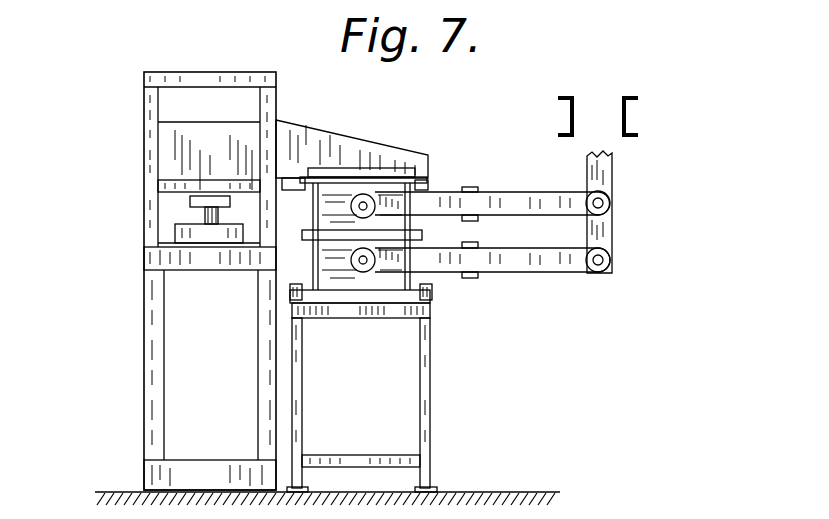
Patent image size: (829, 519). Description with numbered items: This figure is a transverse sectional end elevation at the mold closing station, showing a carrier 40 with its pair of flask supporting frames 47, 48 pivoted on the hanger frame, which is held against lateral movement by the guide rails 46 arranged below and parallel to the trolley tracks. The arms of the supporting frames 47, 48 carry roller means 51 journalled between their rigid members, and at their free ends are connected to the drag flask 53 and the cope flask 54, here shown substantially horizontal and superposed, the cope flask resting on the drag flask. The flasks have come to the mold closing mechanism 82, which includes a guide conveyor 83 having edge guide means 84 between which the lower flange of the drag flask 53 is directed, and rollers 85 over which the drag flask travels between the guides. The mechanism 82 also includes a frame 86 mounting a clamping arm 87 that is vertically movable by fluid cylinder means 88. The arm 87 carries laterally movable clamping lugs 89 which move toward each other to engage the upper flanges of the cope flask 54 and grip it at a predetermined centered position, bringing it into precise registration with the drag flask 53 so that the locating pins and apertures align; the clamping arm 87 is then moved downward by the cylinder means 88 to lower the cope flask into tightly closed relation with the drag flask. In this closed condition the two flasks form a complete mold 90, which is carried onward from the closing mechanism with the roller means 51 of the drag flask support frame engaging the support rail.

The carrier 40 is at (614, 165).
The guide rails 46 is at (622, 116).
The flask supporting frame 47 is at (526, 273).
The flask supporting frame 48 is at (515, 190).
The roller means 51 is at (477, 243).
The drag flask 53 is at (338, 272).
The cope flask 54 is at (334, 183).
The mold closing mechanism 82 is at (277, 103).
The guide conveyor 83 is at (432, 366).
The edge guide means 84 is at (433, 288).
The rollers 85 is at (402, 300).
The frame 86 is at (262, 328).
The clamping arm 87 is at (350, 140).
The fluid cylinder means 88 is at (208, 212).
The clamping lugs 89 is at (294, 190).
The mold 90 is at (422, 241).